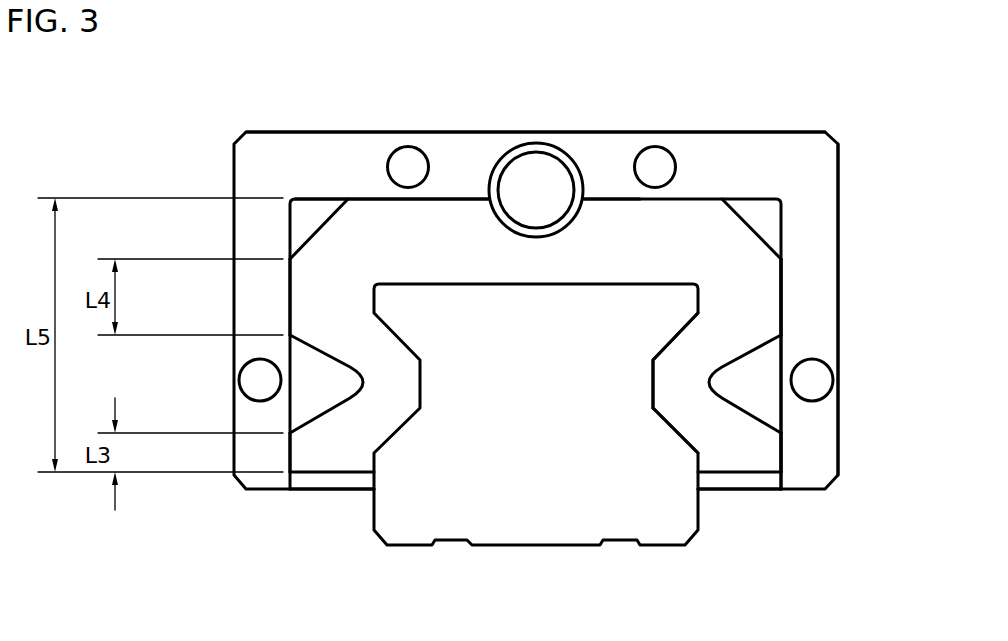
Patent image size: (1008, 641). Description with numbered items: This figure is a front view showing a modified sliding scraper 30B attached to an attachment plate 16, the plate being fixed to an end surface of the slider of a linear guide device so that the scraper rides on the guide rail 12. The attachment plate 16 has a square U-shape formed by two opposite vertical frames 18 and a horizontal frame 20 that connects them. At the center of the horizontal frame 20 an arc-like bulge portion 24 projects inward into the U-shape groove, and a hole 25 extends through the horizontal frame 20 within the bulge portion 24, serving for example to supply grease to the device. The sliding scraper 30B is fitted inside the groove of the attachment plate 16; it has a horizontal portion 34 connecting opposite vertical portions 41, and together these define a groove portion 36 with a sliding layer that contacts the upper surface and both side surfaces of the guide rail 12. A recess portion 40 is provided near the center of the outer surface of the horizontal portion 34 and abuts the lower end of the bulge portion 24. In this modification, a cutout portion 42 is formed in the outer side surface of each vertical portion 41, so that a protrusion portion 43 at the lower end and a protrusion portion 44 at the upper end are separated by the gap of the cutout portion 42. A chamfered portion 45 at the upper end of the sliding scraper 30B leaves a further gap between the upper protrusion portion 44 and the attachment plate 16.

The guide rail 12 is at (558, 530).
The attachment plate 16 is at (695, 132).
The vertical frame 18 is at (822, 215).
The horizontal frame 20 is at (770, 150).
The arc-like bulge portion 24 is at (522, 233).
The hole 25 is at (553, 162).
The sliding scraper 30B is at (766, 310).
The horizontal portion 34 is at (379, 220).
The groove portion 36 is at (675, 432).
The recess portion 40 is at (502, 226).
The vertical portion 41 is at (326, 458).
The cutout portion 42 is at (307, 343).
The protrusion portion 43 is at (290, 458).
The protrusion portion 44 is at (290, 293).
The chamfered portion 45 is at (316, 232).